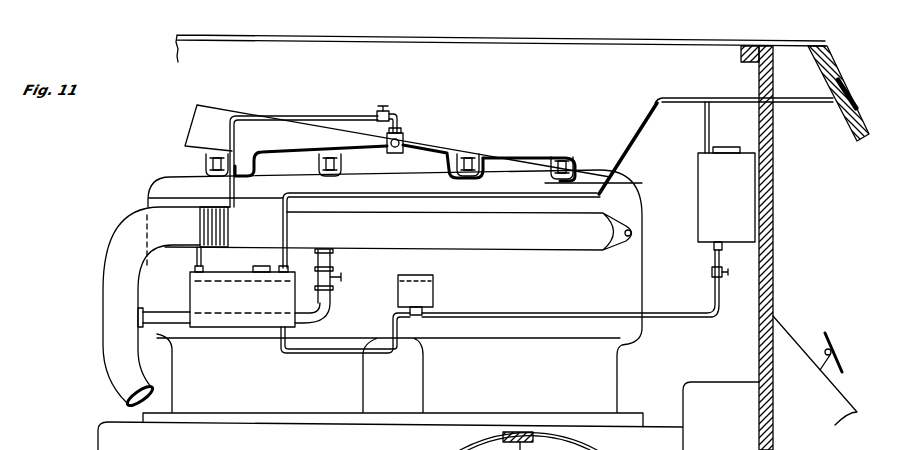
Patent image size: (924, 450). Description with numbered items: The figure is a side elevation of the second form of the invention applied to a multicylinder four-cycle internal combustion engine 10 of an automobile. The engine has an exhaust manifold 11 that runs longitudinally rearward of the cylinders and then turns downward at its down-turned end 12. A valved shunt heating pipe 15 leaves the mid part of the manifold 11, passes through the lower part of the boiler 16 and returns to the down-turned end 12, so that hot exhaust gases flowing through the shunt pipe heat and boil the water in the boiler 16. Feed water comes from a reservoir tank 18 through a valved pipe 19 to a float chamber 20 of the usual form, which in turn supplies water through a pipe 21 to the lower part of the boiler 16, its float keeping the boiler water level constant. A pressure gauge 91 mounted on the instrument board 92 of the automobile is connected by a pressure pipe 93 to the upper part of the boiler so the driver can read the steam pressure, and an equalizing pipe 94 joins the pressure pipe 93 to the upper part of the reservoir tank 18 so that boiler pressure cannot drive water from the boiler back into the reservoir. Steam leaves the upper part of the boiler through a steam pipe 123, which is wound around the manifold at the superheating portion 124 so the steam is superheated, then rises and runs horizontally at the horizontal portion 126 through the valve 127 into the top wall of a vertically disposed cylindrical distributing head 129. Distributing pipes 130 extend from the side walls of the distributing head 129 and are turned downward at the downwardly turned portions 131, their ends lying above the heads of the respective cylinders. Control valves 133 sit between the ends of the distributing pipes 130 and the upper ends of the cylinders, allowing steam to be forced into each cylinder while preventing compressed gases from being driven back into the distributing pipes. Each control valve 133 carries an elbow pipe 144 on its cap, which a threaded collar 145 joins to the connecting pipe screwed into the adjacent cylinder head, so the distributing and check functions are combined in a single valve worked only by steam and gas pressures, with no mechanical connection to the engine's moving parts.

The internal combustion engine 10 is at (645, 232).
The exhaust manifold 11 is at (508, 245).
The down-turned end of the manifold 12 is at (103, 342).
The shunt heating pipe 15 is at (168, 311).
The boiler 16 is at (242, 296).
The reservoir tank 18 is at (726, 198).
The valved pipe 19 is at (674, 320).
The float chamber 20 is at (415, 295).
The pipe 21 is at (314, 356).
The pressure gauge 91 is at (850, 93).
The instrument board 92 is at (863, 124).
The pressure pipe 93 is at (682, 98).
The equalizing pipe 94 is at (710, 124).
The steam pipe 123 is at (204, 258).
The superheating portion of steam pipe 124 is at (200, 226).
The horizontal portion of steam pipe 126 is at (290, 116).
The valve 127 is at (388, 112).
The distributing head 129 is at (405, 138).
The distributing pipes 130 is at (497, 150).
The downwardly turned portion of distributing pipe 131 is at (549, 163).
The control valves 133 is at (342, 167).
The elbow pipe 144 is at (513, 441).
The threaded collar 145 is at (545, 437).